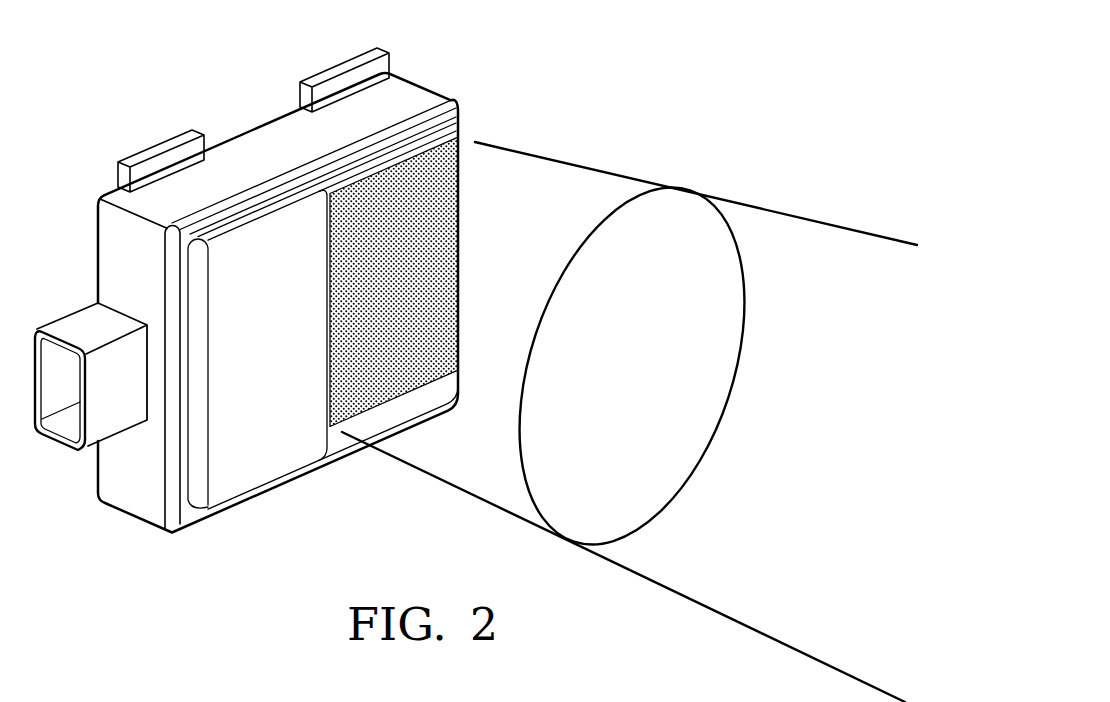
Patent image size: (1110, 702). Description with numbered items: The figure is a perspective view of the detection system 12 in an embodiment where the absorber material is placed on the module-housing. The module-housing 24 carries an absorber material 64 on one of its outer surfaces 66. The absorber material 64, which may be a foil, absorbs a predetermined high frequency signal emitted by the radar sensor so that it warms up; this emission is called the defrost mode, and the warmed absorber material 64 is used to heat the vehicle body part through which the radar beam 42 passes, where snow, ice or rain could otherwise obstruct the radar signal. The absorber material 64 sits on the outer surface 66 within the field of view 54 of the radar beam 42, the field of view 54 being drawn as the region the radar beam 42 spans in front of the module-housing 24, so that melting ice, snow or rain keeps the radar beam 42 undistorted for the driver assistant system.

The sensor assembly 12 is at (255, 100).
The module-housing 24 is at (127, 487).
The outer surface 66 is at (446, 128).
The absorber material 64 is at (446, 217).
The radar beam 42 is at (708, 145).
The field of view 54 is at (707, 397).